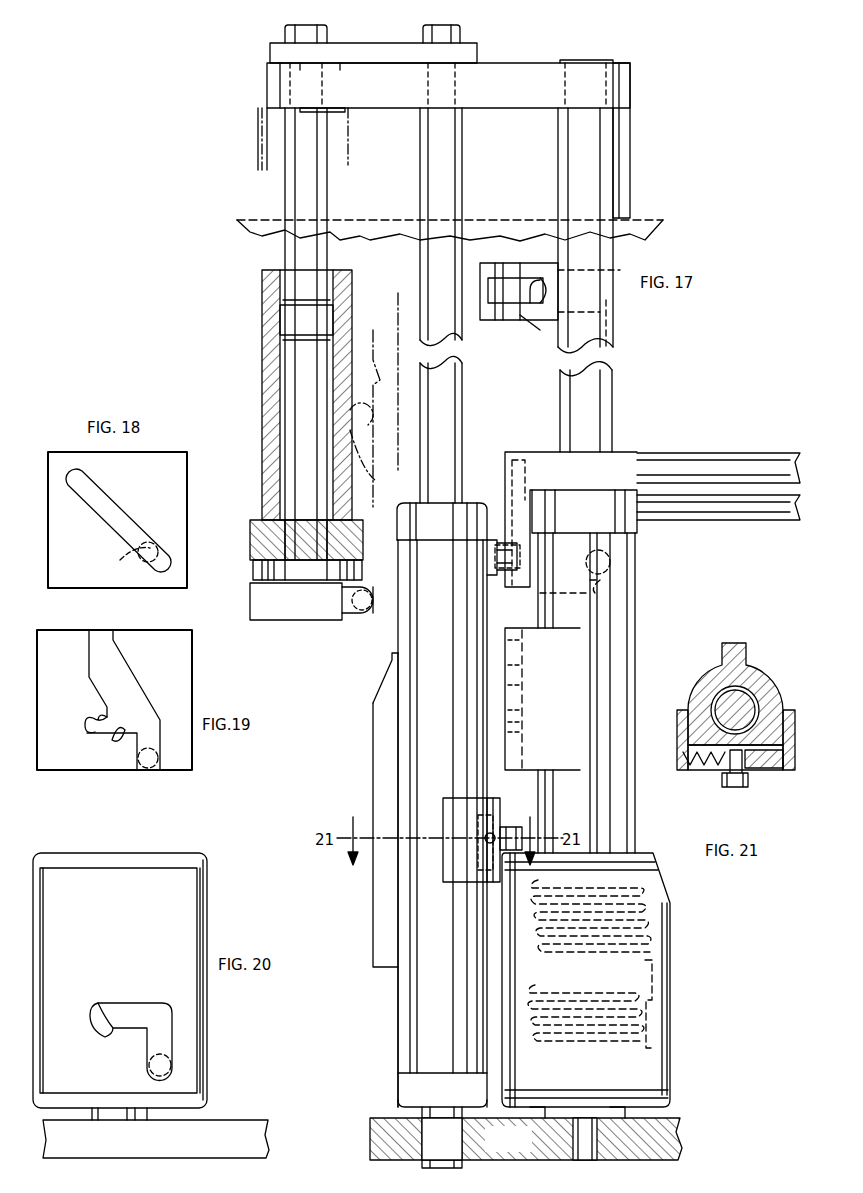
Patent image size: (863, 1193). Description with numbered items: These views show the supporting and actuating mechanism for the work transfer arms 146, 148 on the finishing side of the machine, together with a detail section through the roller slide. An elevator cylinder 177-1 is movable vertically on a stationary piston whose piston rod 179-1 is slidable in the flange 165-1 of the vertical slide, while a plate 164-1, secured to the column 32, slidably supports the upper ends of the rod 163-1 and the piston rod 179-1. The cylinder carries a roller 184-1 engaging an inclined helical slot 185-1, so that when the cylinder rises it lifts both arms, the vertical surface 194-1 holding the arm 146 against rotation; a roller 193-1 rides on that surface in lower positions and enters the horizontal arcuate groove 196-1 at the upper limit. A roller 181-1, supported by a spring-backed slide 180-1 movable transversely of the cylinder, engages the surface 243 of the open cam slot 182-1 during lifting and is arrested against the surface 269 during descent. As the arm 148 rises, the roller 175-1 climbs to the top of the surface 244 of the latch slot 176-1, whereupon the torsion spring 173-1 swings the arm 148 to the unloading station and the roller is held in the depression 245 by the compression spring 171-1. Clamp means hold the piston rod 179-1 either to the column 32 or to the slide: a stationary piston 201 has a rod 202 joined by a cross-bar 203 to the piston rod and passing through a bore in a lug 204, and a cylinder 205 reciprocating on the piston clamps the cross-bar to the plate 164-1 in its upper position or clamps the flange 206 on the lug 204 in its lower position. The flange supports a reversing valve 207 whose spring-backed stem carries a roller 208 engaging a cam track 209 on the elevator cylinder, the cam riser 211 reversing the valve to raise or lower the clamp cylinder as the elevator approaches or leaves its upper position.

In FIG. 17, the cross-bar 203 is at (350, 45).
In FIG. 17, the plate 164-1 is at (625, 128).
In FIG. 17, the rod 163-1 is at (600, 155).
In FIG. 17, the piston rod 179-1 is at (445, 155).
In FIG. 21, the piston rod 179-1 is at (722, 700).
In FIG. 17, the cylinder 205 is at (258, 143).
In FIG. 17, the column 32 is at (358, 240).
In FIG. 17, the horizontal arcuate groove 196-1 is at (505, 290).
In FIG. 17, the roller 193-1 is at (638, 558).
In FIG. 17, the stationary piston 201 is at (295, 315).
In FIG. 17, the rod 202 is at (298, 378).
In FIG. 17, the lug 204 is at (265, 525).
In FIG. 17, the flange 206 is at (268, 572).
In FIG. 17, the reversing valve 207 is at (296, 601).
In FIG. 17, the roller 208 is at (375, 600).
In FIG. 17, the cam riser 211 is at (378, 370).
In FIG. 17, the cam track 209 is at (372, 795).
In FIG. 21, the cam track 209 is at (725, 645).
In FIG. 17, the work transfer arm 146 is at (682, 465).
In FIG. 17, the work transfer arm 148 is at (700, 515).
In FIG. 17, the roller 184-1 is at (495, 553).
In FIG. 18, the roller 184-1 is at (122, 545).
In FIG. 17, the vertical surface 194-1 is at (600, 585).
In FIG. 17, the elevator cylinder 177-1 is at (442, 835).
In FIG. 17, the spring-backed slide 180-1 is at (478, 855).
In FIG. 21, the spring-backed slide 180-1 is at (762, 770).
In FIG. 17, the roller 181-1 is at (518, 830).
In FIG. 19, the roller 181-1 is at (152, 775).
In FIG. 21, the roller 181-1 is at (725, 783).
In FIG. 17, the compression spring 171-1 is at (655, 930).
In FIG. 17, the torsion spring 173-1 is at (572, 1030).
In FIG. 17, the flange 165-1 is at (526, 1139).
In FIG. 20, the flange 165-1 is at (156, 1133).
In FIG. 18, the helical slot 185-1 is at (108, 510).
In FIG. 19, the cam slot 182-1 is at (120, 672).
In FIG. 19, the surface 243 is at (97, 712).
In FIG. 19, the surface 269 is at (118, 738).
In FIG. 20, the latch slot 176-1 is at (122, 1010).
In FIG. 20, the depression 245 is at (100, 1013).
In FIG. 20, the surface 244 is at (150, 1040).
In FIG. 20, the roller 175-1 is at (170, 1065).